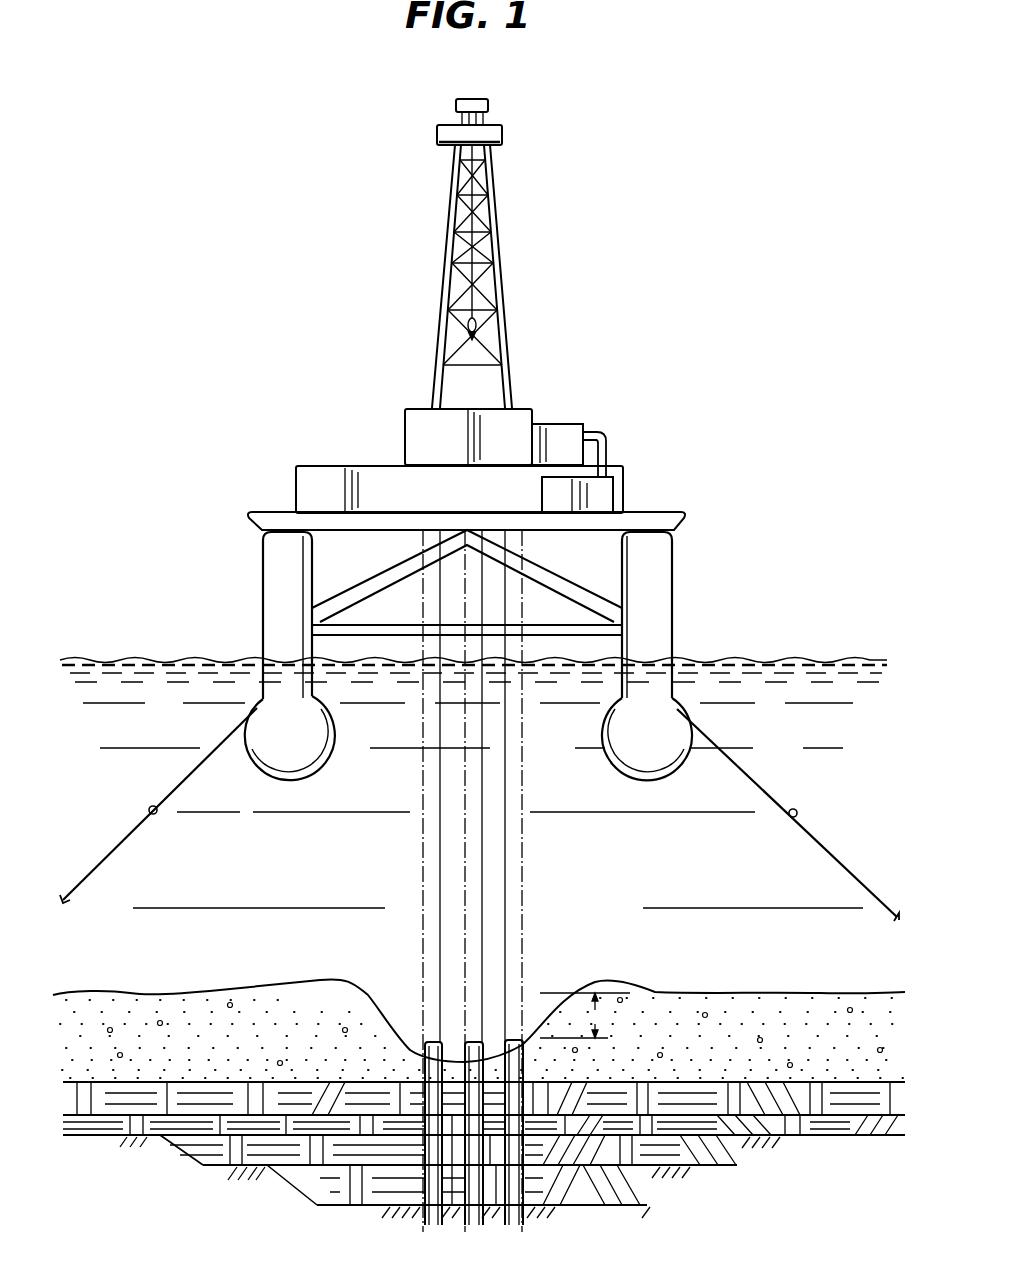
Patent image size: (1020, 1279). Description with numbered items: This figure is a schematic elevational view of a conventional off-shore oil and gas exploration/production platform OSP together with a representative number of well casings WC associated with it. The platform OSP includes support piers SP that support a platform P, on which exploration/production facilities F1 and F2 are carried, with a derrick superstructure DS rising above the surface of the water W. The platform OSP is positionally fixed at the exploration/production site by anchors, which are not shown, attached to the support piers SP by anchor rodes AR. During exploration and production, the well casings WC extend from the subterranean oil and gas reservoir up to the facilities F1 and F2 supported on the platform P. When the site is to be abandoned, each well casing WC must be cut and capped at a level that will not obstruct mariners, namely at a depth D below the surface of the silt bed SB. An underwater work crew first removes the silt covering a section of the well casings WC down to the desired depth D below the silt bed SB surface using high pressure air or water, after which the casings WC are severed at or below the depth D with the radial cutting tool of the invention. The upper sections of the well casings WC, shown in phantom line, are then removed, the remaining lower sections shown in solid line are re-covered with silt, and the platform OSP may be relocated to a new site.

The off-shore oil and gas exploration/production platform OSP is at (566, 377).
The derrick superstructure DS is at (442, 293).
The exploration/production facility F1 is at (447, 503).
The exploration/production facility F2 is at (446, 449).
The platform P is at (652, 517).
The support piers SP is at (302, 711).
The water W is at (346, 874).
The anchor rodes AR is at (151, 806).
The silt bed SB is at (270, 1053).
The well casings WC is at (431, 1040).
The depth D is at (585, 1015).